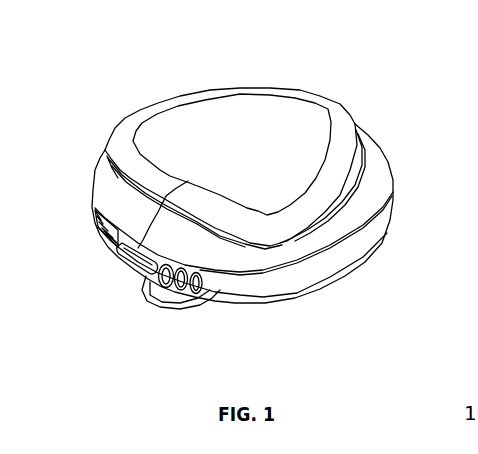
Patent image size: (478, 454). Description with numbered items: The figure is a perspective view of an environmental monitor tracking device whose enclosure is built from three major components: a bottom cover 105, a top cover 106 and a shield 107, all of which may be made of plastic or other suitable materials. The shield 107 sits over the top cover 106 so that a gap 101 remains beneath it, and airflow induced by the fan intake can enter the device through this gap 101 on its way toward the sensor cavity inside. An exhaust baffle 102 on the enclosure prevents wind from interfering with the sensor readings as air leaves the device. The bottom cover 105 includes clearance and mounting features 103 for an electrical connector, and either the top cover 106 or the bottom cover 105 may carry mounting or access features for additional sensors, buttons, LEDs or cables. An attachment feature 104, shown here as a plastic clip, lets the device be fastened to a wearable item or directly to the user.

The gap 101 is at (115, 193).
The exhaust baffle 102 is at (103, 232).
The clearance and mounting features 103 is at (135, 261).
The attachment feature 104 is at (187, 303).
The bottom cover 105 is at (363, 253).
The top cover 106 is at (377, 180).
The shield 107 is at (276, 110).